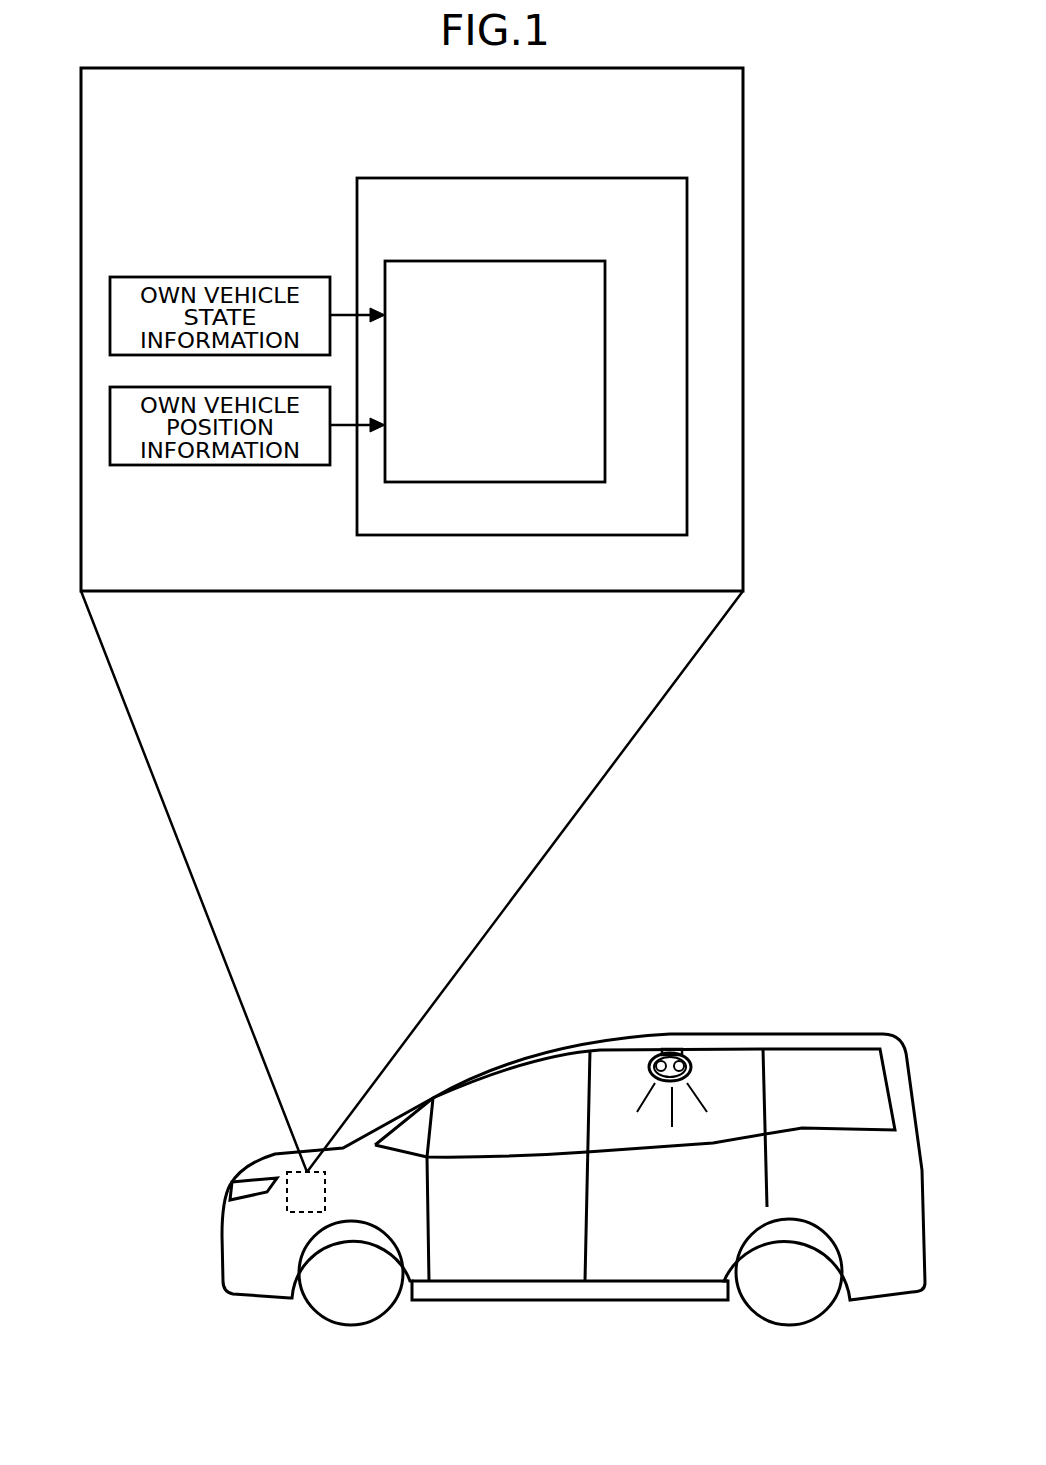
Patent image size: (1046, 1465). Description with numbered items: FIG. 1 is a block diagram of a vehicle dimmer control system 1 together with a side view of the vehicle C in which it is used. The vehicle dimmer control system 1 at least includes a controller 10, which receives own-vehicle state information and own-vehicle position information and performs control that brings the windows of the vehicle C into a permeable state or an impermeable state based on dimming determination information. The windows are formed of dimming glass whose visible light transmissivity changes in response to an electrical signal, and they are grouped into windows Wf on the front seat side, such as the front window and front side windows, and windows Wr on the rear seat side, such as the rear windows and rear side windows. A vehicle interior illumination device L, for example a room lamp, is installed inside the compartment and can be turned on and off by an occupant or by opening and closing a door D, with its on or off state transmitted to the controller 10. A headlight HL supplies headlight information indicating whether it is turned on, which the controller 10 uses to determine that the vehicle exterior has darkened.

The vehicle dimmer control system 1 is at (625, 178).
The controller 10 is at (605, 297).
The vehicle C is at (685, 920).
The headlight HL is at (237, 1188).
The vehicle interior illumination device L is at (650, 1073).
The windows on the front seat side Wf is at (417, 1123).
The windows on the rear seat side Wr is at (723, 1067).
The door D is at (508, 1260).